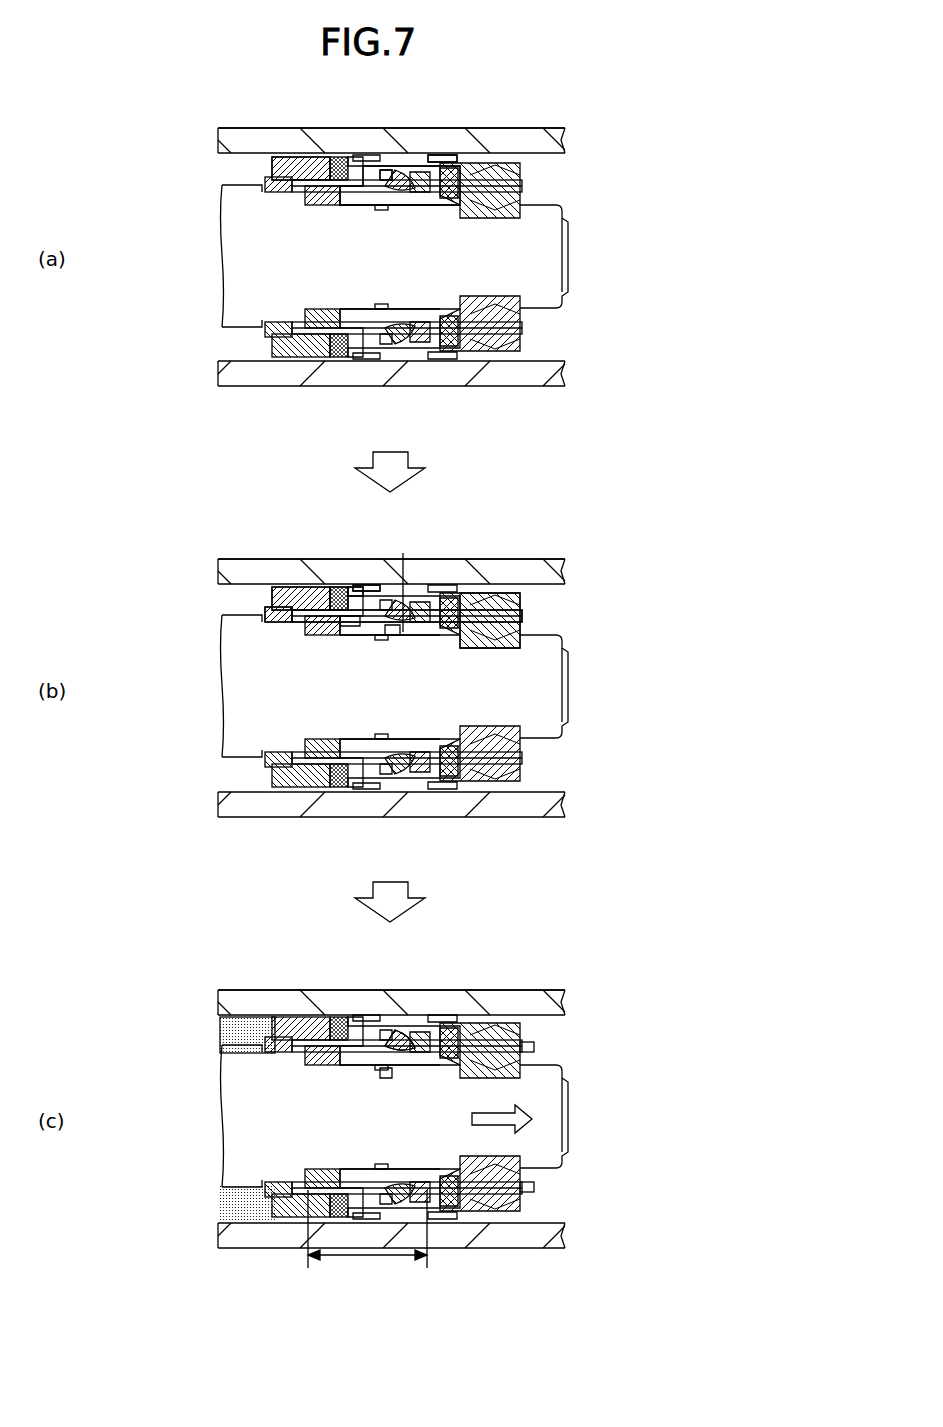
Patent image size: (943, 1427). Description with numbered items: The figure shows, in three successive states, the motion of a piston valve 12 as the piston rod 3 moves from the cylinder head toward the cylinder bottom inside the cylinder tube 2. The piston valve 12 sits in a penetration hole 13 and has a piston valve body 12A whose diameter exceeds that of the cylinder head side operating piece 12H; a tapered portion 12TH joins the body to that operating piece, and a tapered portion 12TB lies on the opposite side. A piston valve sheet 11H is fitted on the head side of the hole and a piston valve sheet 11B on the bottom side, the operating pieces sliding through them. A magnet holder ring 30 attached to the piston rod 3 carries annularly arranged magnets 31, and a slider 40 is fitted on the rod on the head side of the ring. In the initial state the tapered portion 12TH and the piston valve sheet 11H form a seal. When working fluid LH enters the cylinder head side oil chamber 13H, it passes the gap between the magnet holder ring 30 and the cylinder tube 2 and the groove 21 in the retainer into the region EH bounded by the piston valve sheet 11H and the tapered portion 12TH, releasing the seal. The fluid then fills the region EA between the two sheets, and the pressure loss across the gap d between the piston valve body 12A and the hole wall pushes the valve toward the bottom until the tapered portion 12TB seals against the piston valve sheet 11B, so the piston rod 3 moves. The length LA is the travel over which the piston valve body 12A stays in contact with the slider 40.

The cylinder tube 2 is at (534, 132).
The piston rod 3 is at (568, 252).
The piston valve sheet 11H is at (338, 163).
The tapered portion 12TH is at (393, 178).
The piston valve body 12A is at (435, 178).
The piston valve 12 is at (408, 199).
The magnet holder ring 30 is at (276, 595).
The magnets 31 is at (321, 595).
The groove 21 is at (351, 595).
The gap d is at (417, 605).
The penetration hole 13 is at (467, 595).
The slider 40 is at (277, 622).
The cylinder head side operating piece 12H is at (335, 628).
The region EH is at (390, 630).
The piston valve sheet 11B is at (454, 629).
The cylinder head side oil chamber 13H is at (238, 1033).
The tapered portion 12TB is at (396, 1038).
The region EA is at (384, 1065).
The length LA is at (367, 1239).
The working fluid LH is at (228, 164).